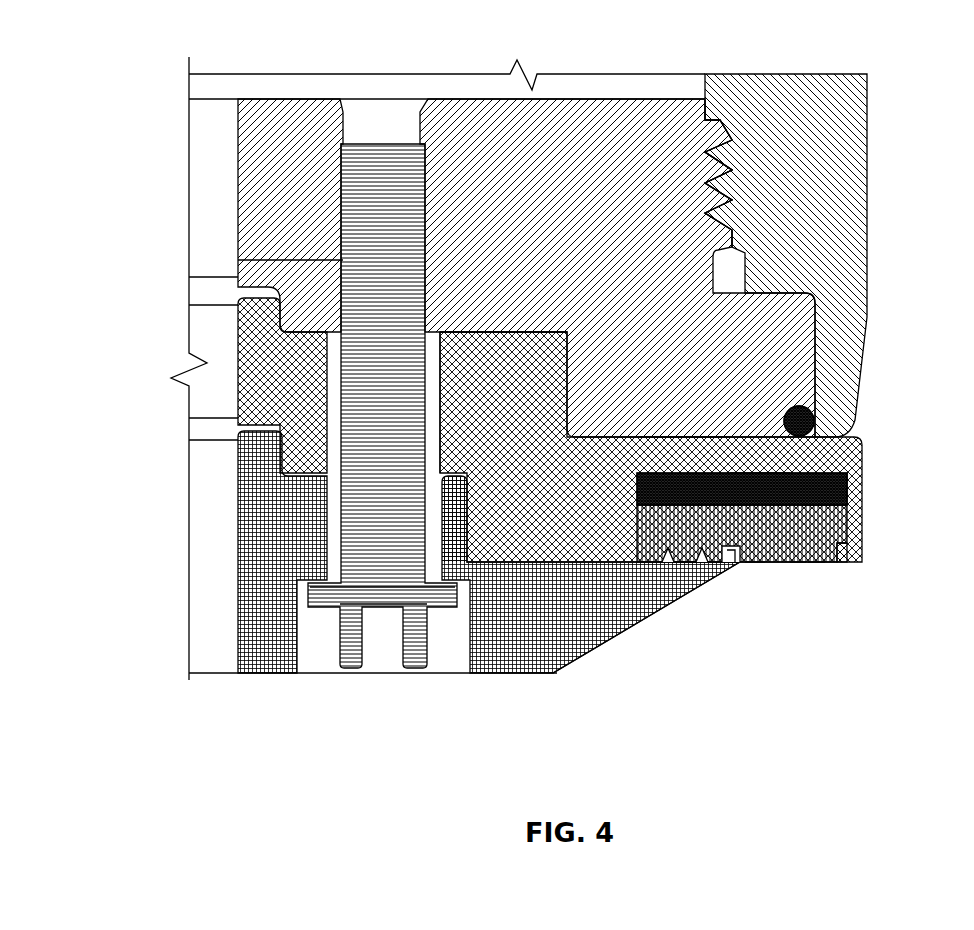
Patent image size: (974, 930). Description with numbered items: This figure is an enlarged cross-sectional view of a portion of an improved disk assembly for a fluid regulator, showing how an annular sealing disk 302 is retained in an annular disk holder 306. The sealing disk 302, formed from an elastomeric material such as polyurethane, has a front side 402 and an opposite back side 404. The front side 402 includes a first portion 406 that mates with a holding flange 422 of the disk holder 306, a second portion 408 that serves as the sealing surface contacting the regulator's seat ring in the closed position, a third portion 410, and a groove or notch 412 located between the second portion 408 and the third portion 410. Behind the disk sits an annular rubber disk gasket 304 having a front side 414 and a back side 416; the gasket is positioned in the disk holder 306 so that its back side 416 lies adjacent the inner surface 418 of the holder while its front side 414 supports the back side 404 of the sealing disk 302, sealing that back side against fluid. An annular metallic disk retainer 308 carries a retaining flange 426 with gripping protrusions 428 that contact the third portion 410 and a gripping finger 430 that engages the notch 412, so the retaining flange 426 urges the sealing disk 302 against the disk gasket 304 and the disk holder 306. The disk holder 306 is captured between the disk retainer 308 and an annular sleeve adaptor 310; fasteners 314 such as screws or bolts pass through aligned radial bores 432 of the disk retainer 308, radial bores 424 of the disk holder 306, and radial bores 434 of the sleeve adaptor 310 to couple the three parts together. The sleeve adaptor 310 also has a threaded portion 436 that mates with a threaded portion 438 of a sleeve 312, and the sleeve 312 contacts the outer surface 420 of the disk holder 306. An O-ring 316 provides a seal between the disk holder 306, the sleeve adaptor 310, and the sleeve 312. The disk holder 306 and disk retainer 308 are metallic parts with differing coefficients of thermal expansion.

The sealing disk 302 is at (818, 525).
The disk gasket 304 is at (827, 502).
The disk holder 306 is at (500, 437).
The disk retainer 308 is at (510, 648).
The sleeve adaptor 310 is at (466, 272).
The sleeve 312 is at (837, 167).
The fasteners 314 is at (380, 547).
The O-ring 316 is at (803, 410).
The front side 402 is at (798, 562).
The back side 404 is at (810, 507).
The first portion 406 is at (838, 553).
The second portion 408 is at (815, 562).
The third portion 410 is at (672, 560).
The notch 412 is at (755, 562).
The front side 414 is at (830, 495).
The back side 416 is at (760, 473).
The inner surface 418 is at (717, 473).
The outer surface 420 is at (680, 437).
The holding flange 422 is at (840, 562).
The radial bores 424 is at (330, 407).
The retaining flange 426 is at (577, 620).
The gripping protrusions 428 is at (668, 558).
The gripping finger 430 is at (735, 560).
The radial bores 432 is at (332, 547).
The radial bores 434 is at (340, 245).
The threaded portion 436 is at (718, 127).
The threaded portion 438 is at (723, 123).